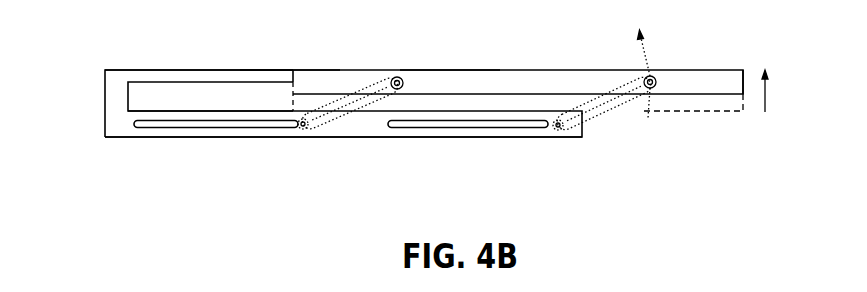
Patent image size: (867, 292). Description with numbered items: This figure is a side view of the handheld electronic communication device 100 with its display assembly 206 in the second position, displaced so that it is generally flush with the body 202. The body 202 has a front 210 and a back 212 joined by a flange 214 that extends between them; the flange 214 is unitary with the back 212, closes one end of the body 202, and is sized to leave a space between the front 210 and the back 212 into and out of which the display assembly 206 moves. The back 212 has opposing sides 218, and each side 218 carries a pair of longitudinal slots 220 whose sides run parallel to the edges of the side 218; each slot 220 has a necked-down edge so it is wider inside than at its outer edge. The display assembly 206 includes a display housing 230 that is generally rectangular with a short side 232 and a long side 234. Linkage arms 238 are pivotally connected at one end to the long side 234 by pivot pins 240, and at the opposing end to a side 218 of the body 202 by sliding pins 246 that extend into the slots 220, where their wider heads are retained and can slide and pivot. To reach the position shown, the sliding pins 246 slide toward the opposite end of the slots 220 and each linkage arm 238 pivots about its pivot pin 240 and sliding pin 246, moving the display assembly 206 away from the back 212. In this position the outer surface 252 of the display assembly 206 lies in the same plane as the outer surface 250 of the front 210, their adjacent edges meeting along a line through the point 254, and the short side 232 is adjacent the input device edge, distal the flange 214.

The handheld electronic communication device 100 is at (94, 166).
The body 202 is at (105, 70).
The display assembly 206 is at (540, 70).
The front 210 is at (188, 68).
The back 212 is at (568, 137).
The flange 214 is at (122, 103).
The side 218 is at (182, 134).
The slot 220 is at (222, 124).
The display housing 230 is at (648, 70).
The short side 232 is at (738, 80).
The long side 234 is at (458, 78).
The linkage arm 238 is at (342, 112).
The pivot pin 240 is at (393, 79).
The sliding pin 246 is at (308, 130).
The outer surface of the front 250 is at (277, 68).
The outer surface of the display assembly 252 is at (302, 68).
The point 254 is at (293, 70).